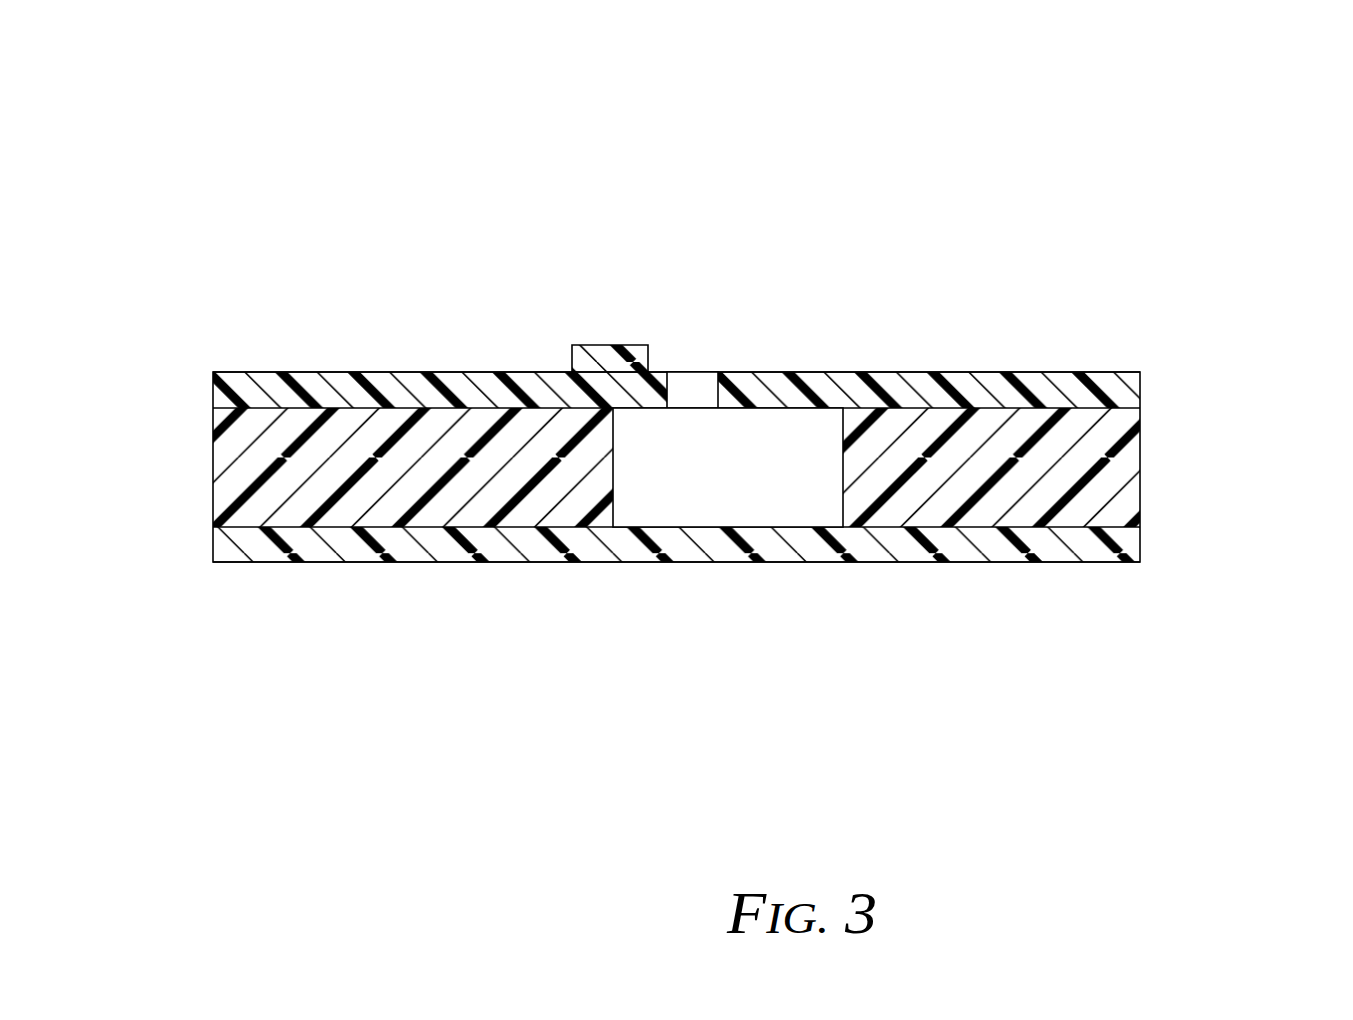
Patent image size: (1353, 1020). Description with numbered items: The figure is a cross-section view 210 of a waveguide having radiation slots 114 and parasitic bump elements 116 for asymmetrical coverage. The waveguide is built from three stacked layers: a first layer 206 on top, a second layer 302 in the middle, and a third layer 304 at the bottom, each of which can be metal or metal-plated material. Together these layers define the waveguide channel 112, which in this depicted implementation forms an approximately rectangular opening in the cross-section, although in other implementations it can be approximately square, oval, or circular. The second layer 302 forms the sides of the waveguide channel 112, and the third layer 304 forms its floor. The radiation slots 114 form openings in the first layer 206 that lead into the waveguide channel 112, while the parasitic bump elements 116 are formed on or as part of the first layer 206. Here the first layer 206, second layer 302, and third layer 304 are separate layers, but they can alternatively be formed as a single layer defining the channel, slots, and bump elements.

The cross-section view 210 is at (214, 57).
The first layer 206 is at (1133, 385).
The second layer 302 is at (1105, 465).
The third layer 304 is at (1080, 550).
The waveguide channel 112 is at (732, 483).
The radiation slots 114 is at (697, 390).
The parasitic bump elements 116 is at (603, 353).